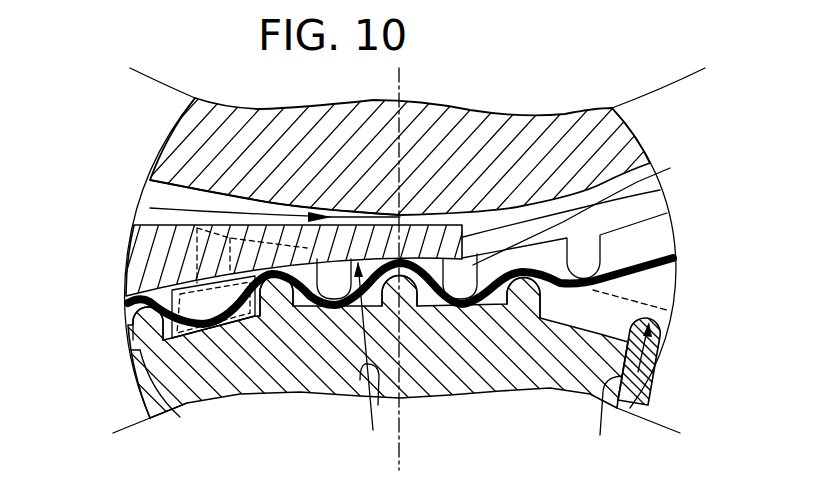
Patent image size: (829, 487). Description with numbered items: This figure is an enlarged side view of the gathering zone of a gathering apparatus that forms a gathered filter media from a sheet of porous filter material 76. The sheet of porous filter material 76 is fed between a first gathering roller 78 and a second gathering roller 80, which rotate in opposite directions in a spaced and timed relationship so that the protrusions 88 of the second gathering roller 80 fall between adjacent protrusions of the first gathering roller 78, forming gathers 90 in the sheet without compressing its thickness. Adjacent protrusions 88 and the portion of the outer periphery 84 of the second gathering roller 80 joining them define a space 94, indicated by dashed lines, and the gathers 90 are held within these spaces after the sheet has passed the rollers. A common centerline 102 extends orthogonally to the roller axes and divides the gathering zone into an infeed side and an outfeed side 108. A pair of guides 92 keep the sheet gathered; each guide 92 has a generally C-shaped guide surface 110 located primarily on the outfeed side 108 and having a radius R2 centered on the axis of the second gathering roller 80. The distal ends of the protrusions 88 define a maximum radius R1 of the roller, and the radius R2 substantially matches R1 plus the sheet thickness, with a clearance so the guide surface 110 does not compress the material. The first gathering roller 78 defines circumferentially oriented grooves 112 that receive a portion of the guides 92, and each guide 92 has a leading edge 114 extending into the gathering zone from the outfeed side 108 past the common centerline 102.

The first gathering roller 78 is at (622, 155).
The outfeed side 108 is at (152, 210).
The circumferentially oriented grooves 112 is at (150, 207).
The common centerline 102 is at (401, 82).
The guides 92 is at (160, 252).
The space 94 is at (197, 272).
The gathers 90 is at (172, 315).
The outer periphery 84 is at (247, 365).
The protrusions 88 is at (158, 365).
The porous filter material 76 is at (678, 262).
The guide surface 110 is at (735, 187).
The leading edge 114 is at (670, 168).
The second gathering roller 80 is at (655, 358).
The radius of the guide surface R2 is at (373, 360).
The maximum radius R1 is at (603, 418).